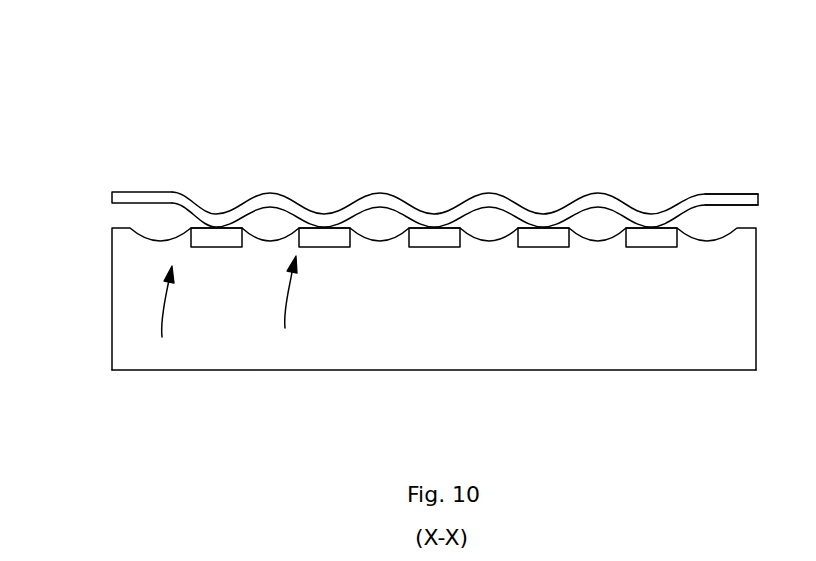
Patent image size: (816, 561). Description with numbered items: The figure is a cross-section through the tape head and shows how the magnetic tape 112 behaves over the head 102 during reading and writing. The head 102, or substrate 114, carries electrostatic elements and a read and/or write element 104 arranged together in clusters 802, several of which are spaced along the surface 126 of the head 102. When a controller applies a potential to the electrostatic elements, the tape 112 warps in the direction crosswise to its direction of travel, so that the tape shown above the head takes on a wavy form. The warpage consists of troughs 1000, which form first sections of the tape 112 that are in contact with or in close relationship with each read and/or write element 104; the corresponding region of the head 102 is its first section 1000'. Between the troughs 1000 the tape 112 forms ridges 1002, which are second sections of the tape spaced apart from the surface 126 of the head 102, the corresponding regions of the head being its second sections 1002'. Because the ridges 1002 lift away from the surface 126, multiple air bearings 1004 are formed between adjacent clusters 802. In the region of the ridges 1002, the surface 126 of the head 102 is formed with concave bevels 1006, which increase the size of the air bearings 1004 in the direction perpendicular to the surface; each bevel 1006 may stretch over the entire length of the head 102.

The head 102 is at (112, 315).
The read and/or write element 104 is at (212, 236).
The tape 112 is at (126, 198).
The substrate 114 is at (213, 360).
The surface of the head 126 is at (122, 228).
The clusters 802 is at (219, 306).
The troughs 1000 is at (449, 123).
The first section of the head 1000' is at (383, 262).
The ridges 1002 is at (465, 174).
The second sections of the head 1002' is at (465, 135).
The air bearings 1004 is at (162, 215).
The concave bevels 1006 is at (143, 238).